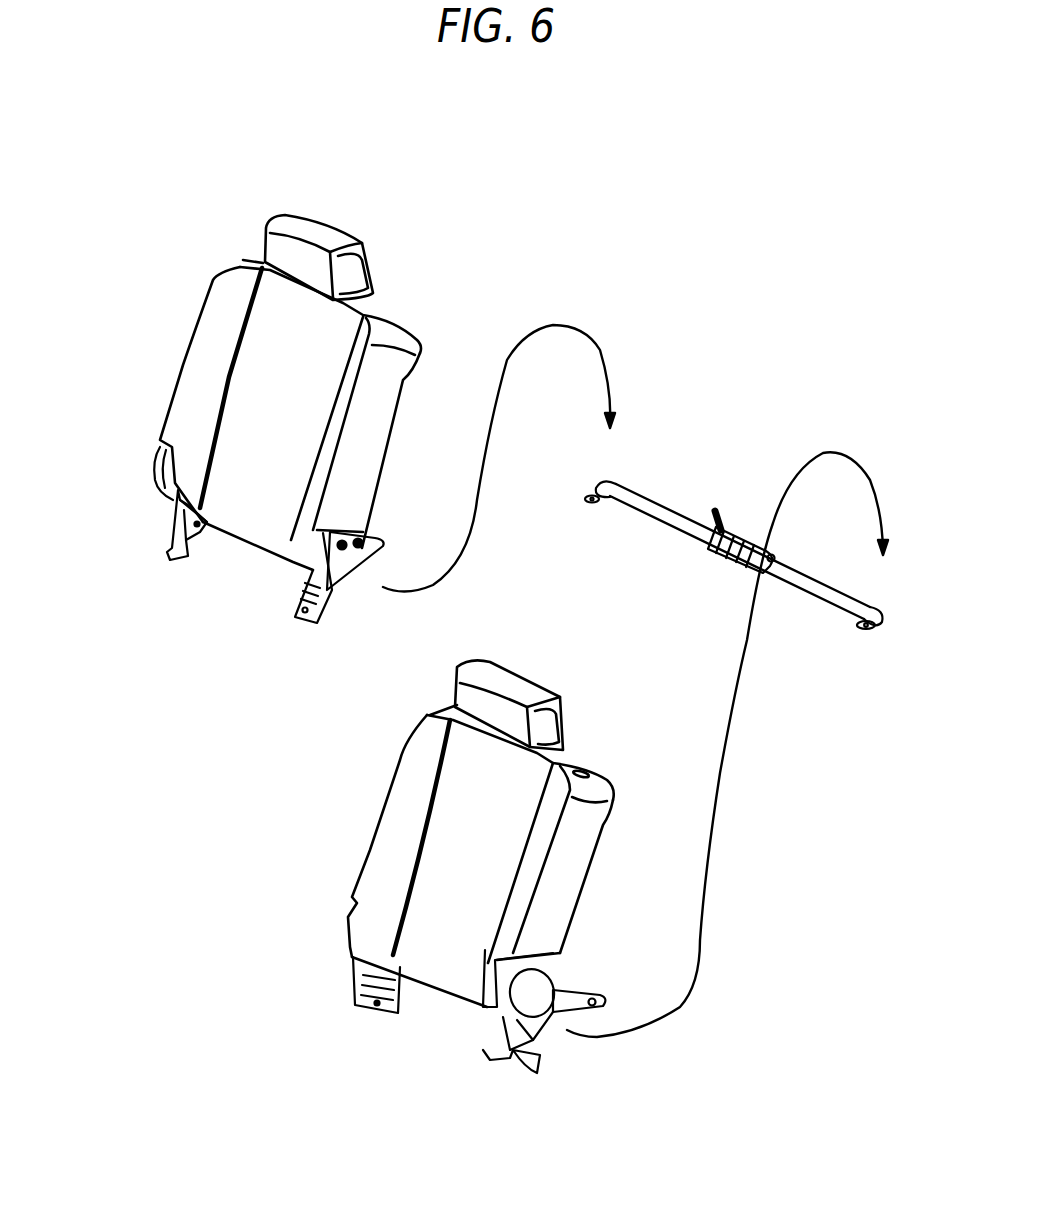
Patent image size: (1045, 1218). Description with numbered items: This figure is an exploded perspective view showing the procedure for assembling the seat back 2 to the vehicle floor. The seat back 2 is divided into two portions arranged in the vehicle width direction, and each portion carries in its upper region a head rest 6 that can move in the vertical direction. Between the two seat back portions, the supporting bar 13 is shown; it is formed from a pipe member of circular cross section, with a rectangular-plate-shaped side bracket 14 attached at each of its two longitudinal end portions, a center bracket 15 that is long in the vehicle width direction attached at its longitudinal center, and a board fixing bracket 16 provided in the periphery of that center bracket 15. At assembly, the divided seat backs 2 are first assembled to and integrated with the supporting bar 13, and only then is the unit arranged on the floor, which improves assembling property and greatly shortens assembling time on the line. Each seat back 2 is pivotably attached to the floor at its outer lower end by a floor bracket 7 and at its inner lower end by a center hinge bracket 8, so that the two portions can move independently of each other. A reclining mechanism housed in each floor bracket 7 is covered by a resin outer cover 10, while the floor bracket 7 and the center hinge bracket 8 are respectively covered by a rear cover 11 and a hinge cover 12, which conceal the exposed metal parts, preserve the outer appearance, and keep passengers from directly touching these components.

The seat back 2 is at (183, 397).
The head rest 6 is at (312, 227).
The floor bracket 7 is at (193, 552).
The center hinge bracket 8 is at (303, 598).
The outer cover 10 is at (157, 472).
The rear cover 11 is at (593, 983).
The hinge cover 12 is at (350, 567).
The supporting bar 13 is at (813, 600).
The side bracket 14 is at (590, 495).
The center bracket 15 is at (740, 538).
The board fixing bracket 16 is at (718, 508).